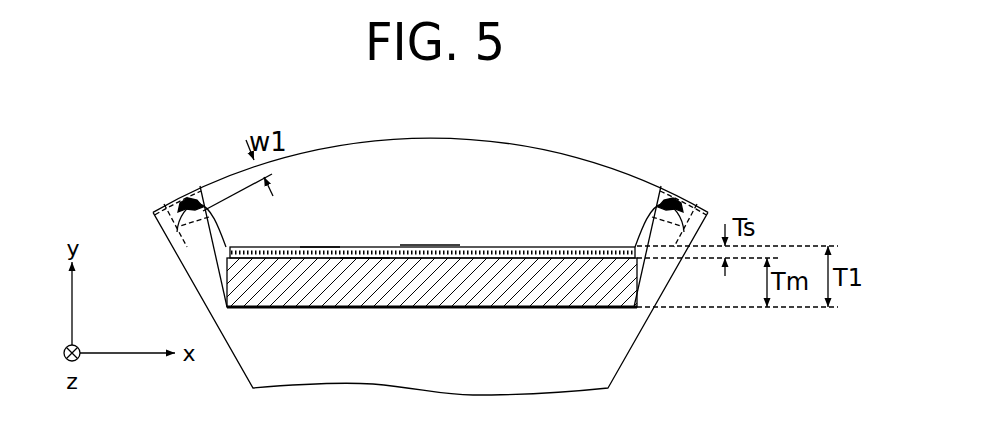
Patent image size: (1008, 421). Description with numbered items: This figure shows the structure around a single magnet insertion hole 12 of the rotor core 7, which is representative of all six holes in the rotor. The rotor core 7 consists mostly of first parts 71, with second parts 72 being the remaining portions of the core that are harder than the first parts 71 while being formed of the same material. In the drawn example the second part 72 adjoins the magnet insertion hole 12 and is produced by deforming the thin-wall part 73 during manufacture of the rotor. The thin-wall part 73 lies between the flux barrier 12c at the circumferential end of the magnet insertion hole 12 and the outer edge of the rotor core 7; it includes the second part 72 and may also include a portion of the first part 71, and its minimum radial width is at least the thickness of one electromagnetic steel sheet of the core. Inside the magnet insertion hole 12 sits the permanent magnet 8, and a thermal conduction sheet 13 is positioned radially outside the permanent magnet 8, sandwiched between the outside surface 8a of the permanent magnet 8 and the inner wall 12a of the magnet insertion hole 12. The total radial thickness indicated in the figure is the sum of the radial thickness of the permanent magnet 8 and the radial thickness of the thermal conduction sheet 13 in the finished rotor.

The rotor core 7 is at (431, 135).
The first part 71 is at (344, 163).
The second part 72 is at (202, 203).
The thin-wall part 73 is at (190, 188).
The permanent magnet 8 is at (429, 297).
The outside surface 8a is at (318, 246).
The magnet insertion hole 12 is at (494, 297).
The inner wall 12a is at (366, 257).
The flux barrier 12c is at (208, 247).
The thermal conduction sheet 13 is at (431, 243).